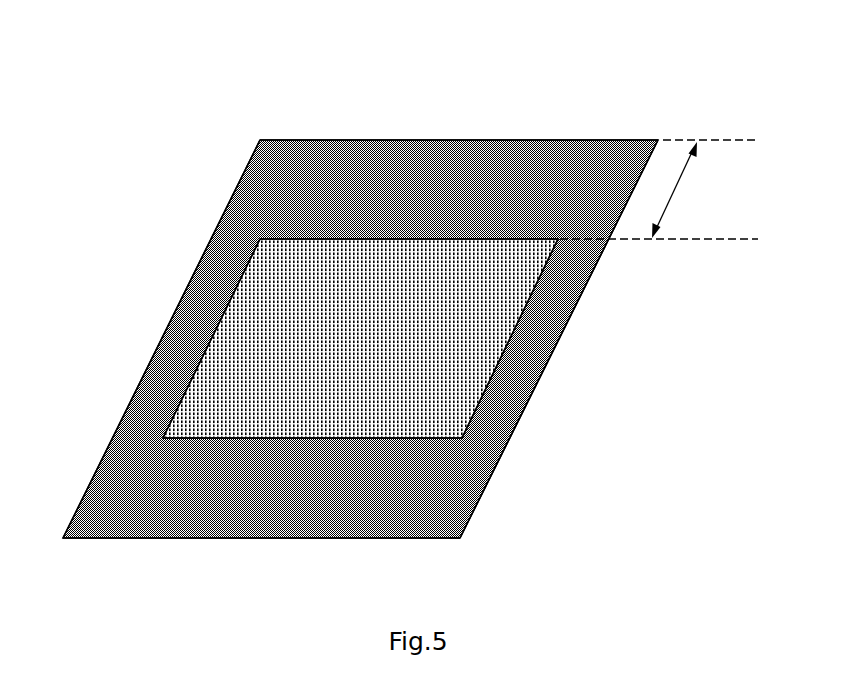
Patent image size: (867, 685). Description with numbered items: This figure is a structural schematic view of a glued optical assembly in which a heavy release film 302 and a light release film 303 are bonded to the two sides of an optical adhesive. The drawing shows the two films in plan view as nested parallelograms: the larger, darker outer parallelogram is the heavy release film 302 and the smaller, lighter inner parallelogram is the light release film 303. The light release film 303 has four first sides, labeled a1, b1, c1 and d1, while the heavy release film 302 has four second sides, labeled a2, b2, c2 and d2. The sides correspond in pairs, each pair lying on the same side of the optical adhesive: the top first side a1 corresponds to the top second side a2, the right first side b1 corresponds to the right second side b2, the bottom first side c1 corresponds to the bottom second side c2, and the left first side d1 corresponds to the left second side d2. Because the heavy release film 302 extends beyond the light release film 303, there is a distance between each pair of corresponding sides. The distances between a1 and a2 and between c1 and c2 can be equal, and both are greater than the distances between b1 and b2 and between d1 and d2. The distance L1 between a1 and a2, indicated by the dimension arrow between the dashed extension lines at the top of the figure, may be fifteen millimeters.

The heavy release film 302 is at (509, 128).
The light release film 303 is at (311, 227).
The second side of the heavy release film a2 is at (459, 130).
The second side of the heavy release film b2 is at (559, 339).
The second side of the heavy release film c2 is at (261, 553).
The second side of the heavy release film d2 is at (161, 339).
The first side of the light release film a1 is at (409, 255).
The first side of the light release film b1 is at (510, 338).
The first side of the light release film c1 is at (312, 420).
The first side of the light release film d1 is at (211, 338).
The distance between a1 and a2 L1 is at (659, 189).